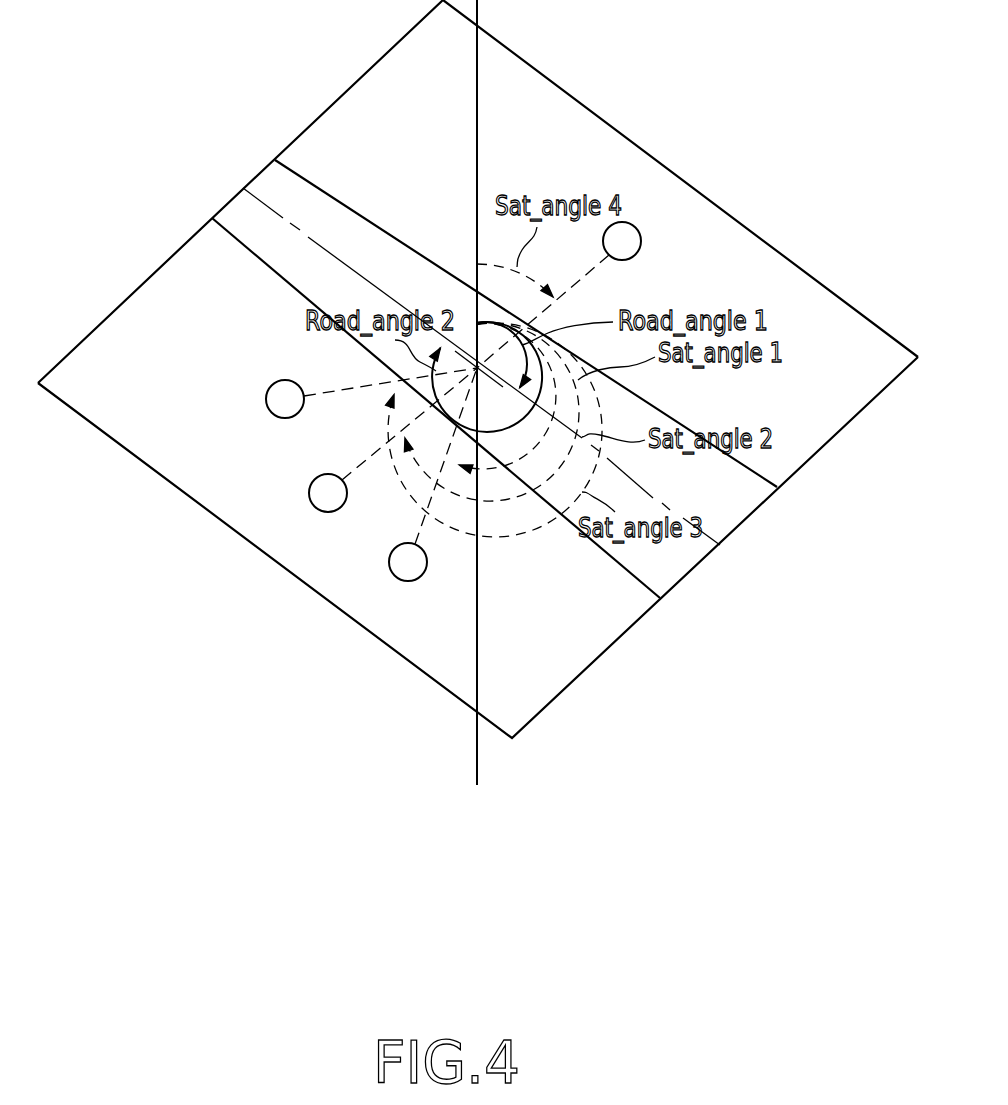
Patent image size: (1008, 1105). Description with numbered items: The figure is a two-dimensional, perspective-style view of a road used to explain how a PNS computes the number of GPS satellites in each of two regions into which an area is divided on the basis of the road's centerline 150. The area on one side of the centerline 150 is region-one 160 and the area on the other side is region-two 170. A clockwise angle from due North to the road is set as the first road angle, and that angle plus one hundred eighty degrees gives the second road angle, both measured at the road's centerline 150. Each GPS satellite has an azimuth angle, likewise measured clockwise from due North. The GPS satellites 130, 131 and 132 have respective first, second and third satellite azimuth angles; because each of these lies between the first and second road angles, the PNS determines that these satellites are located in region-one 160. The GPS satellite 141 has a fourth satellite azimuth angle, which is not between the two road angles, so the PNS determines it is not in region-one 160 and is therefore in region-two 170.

The GPS satellite 130 is at (266, 402).
The GPS satellite 131 is at (310, 497).
The GPS satellite 132 is at (391, 568).
The GPS satellite 141 is at (641, 241).
The road's centerline 150 is at (257, 197).
The region-1 160 is at (148, 275).
The region-2 170 is at (358, 80).